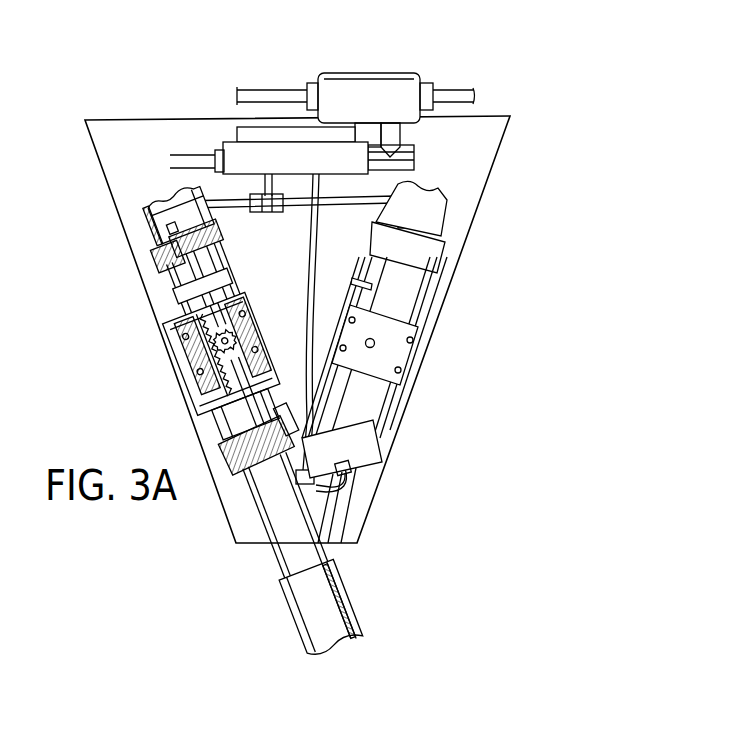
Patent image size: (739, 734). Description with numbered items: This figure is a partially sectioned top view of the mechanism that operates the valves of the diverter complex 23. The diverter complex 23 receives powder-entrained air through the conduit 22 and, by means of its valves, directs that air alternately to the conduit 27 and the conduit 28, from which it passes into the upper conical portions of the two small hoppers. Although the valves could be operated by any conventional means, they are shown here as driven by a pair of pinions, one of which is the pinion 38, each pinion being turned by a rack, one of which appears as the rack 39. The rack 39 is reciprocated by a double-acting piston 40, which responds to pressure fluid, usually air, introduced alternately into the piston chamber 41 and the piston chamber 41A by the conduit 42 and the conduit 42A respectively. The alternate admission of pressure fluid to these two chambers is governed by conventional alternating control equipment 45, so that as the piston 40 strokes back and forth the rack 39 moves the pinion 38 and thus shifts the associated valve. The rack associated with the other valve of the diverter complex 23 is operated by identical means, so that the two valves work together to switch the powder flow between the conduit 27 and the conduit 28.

The conduit 22 is at (340, 617).
The diverter complex 23 is at (390, 423).
The conduit 27 is at (430, 211).
The conduit 28 is at (145, 218).
The pinion 38 is at (228, 312).
The rack 39 is at (258, 378).
The double-acting piston 40 is at (187, 295).
The piston chamber 41 is at (170, 280).
The piston chamber 41A is at (230, 453).
The conduit 42 is at (177, 193).
The conduit 42A is at (280, 472).
The alternating control equipment 45 is at (228, 126).